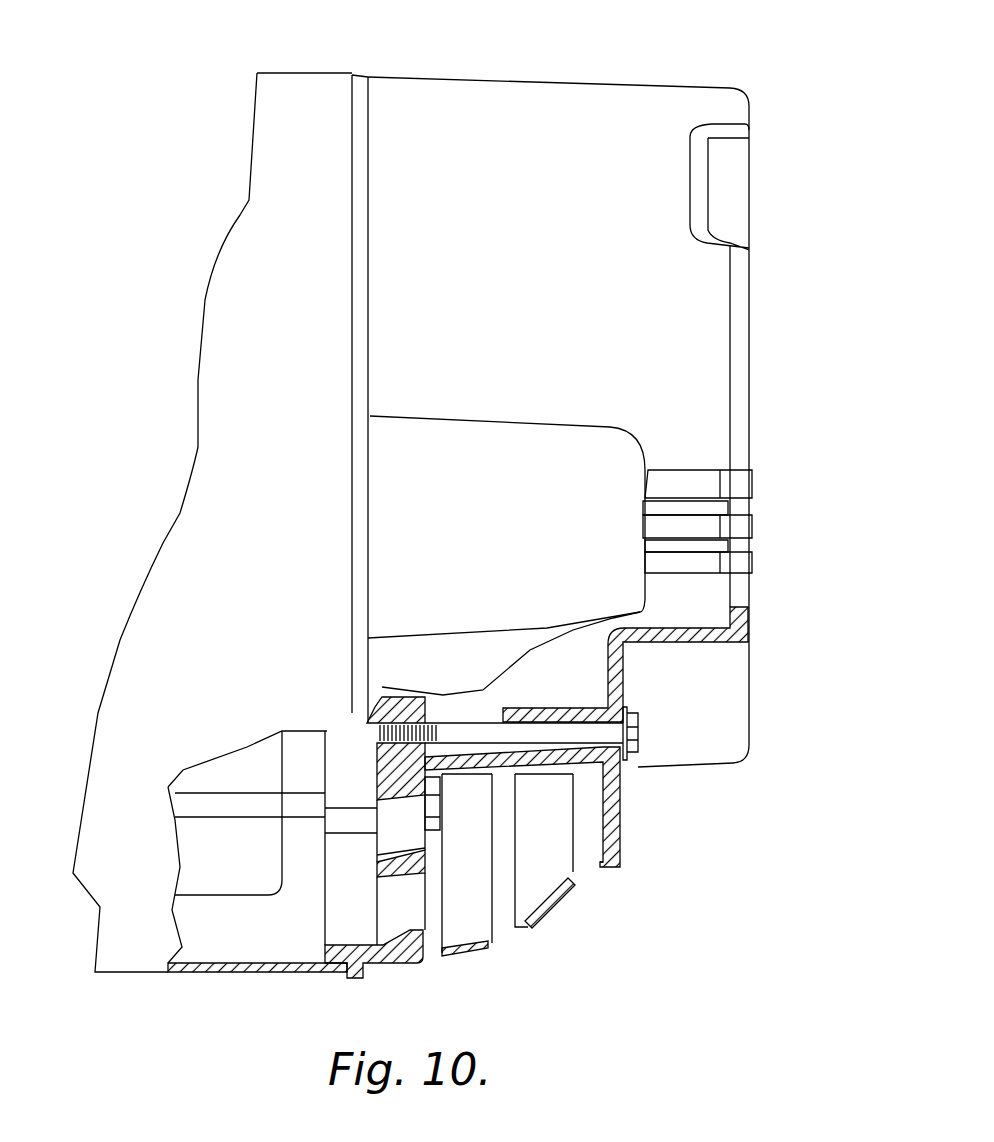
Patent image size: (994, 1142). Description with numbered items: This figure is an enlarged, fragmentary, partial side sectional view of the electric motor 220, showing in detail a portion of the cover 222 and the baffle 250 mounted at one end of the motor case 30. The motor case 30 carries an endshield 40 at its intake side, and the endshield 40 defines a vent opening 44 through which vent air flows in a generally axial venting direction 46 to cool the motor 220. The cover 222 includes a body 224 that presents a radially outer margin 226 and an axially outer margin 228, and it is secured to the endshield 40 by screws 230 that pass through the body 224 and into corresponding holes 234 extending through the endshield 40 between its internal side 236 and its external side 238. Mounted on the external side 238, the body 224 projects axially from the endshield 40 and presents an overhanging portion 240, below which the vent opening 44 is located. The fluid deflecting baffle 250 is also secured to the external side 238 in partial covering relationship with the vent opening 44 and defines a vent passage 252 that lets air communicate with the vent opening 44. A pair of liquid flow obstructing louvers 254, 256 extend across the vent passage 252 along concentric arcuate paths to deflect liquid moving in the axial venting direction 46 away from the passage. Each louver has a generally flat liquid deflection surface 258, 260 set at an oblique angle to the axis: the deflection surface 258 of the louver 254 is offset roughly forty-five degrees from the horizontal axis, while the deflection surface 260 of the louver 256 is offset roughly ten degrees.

The motor 220 is at (200, 195).
The cover 222 is at (660, 72).
The body 224 is at (712, 277).
The radially outer margin 226 is at (430, 93).
The axially outer margin 228 is at (750, 340).
The motor case 30 is at (218, 457).
The overhanging portion 240 is at (690, 650).
The screws 230 is at (627, 728).
The holes 234 is at (383, 737).
The internal side 236 is at (377, 865).
The external side 238 is at (423, 862).
The vent opening 44 is at (393, 888).
The endshield 40 is at (387, 953).
The axial venting direction 46 is at (668, 857).
The vent passage 252 is at (588, 873).
The fluid deflecting baffle 250 is at (677, 967).
The louver 256 is at (462, 925).
The louver 254 is at (538, 878).
The liquid deflection surface 258 is at (567, 898).
The liquid deflection surface 260 is at (482, 952).